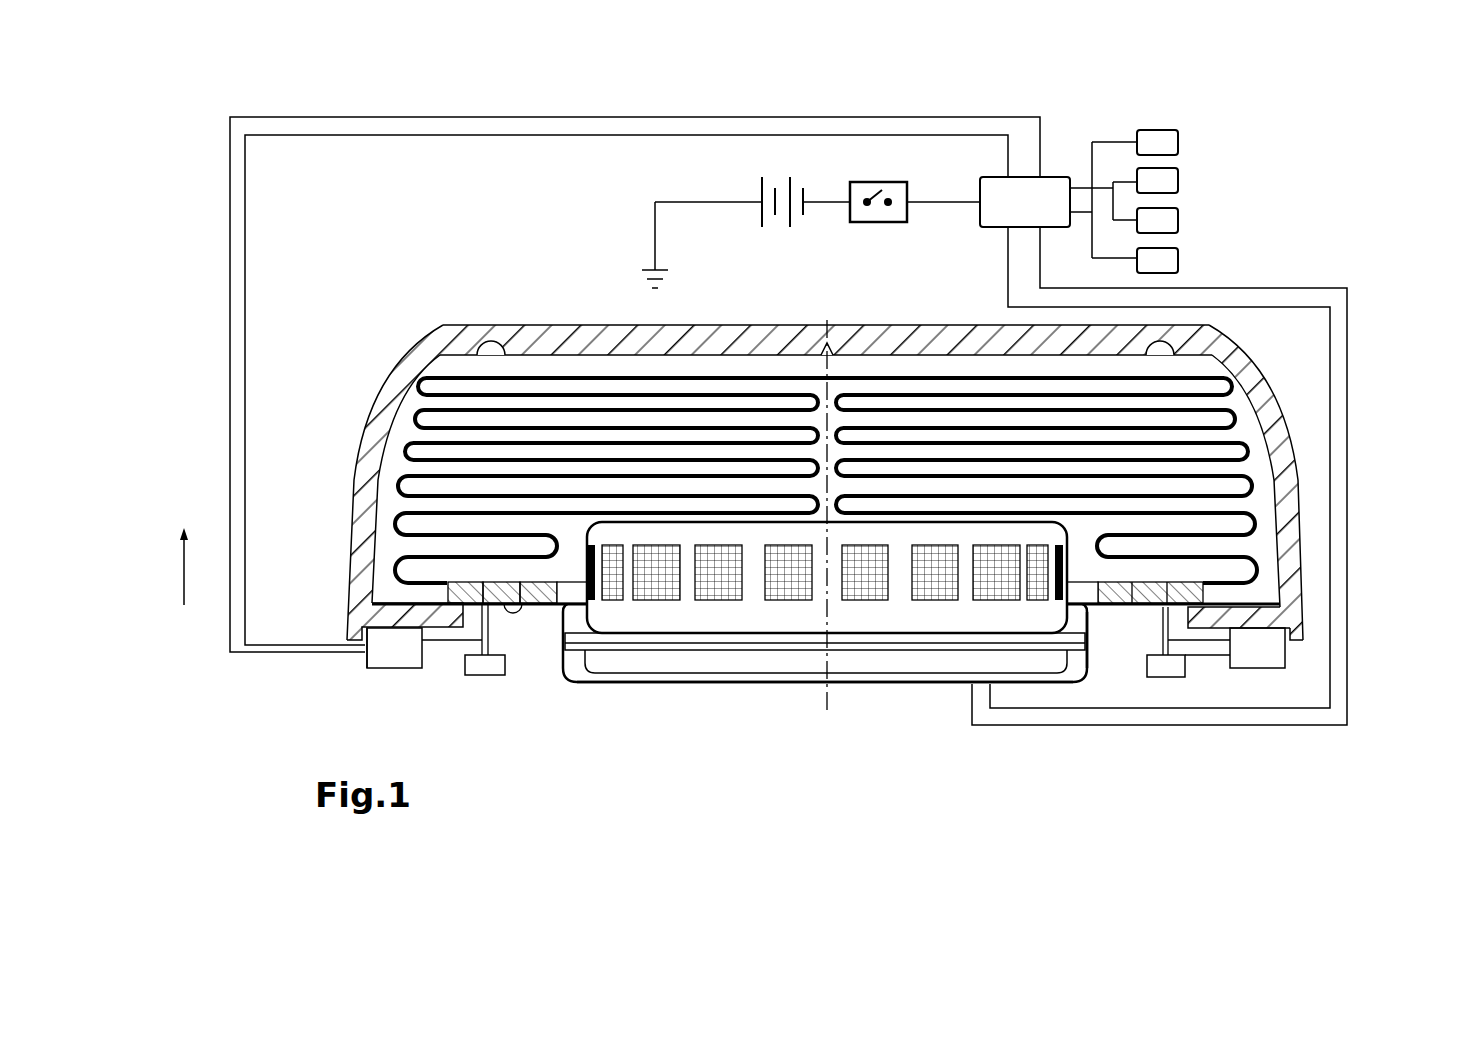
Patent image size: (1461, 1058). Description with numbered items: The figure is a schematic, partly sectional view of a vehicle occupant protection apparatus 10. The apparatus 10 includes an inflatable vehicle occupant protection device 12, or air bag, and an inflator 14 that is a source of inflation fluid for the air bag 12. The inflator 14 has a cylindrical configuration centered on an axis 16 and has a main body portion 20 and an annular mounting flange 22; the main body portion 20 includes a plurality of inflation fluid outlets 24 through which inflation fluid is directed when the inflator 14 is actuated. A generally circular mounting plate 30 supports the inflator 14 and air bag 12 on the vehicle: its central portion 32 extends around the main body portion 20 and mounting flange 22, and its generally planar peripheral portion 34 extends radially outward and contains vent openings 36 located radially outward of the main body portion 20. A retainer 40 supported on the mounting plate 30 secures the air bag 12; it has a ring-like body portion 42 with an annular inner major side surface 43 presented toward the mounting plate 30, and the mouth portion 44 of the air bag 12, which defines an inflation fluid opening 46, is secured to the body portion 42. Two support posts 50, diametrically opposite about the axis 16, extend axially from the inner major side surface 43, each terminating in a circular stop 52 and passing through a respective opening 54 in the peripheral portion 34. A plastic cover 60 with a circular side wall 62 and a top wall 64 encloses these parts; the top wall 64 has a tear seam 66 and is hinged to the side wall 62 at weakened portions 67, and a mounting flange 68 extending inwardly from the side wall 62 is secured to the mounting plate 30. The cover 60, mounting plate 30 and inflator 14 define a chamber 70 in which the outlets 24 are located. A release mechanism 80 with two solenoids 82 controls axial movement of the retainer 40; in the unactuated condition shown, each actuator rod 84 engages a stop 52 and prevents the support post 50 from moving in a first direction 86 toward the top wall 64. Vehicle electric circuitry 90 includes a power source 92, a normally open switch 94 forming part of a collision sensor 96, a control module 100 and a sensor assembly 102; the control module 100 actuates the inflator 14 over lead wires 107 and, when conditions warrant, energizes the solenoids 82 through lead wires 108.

The vehicle occupant protection apparatus 10 is at (486, 788).
The inflatable vehicle occupant protection device 12 is at (423, 358).
The inflator 14 is at (750, 665).
The axis 16 is at (830, 318).
The main body portion 20 is at (794, 617).
The annular mounting flange 22 is at (673, 650).
The inflation fluid outlets 24 is at (933, 587).
The mounting plate 30 is at (928, 690).
The central portion 32 is at (1063, 686).
The peripheral portion 34 is at (1243, 604).
The vent openings 36 is at (488, 630).
The retainer 40 is at (462, 575).
The body portion 42 is at (395, 593).
The annular inner major side surface 43 is at (514, 600).
The mouth portion 44 is at (373, 598).
The inflation fluid opening 46 is at (1182, 572).
The support posts 50 is at (543, 608).
The circular stop 52 is at (487, 668).
The opening 54 is at (492, 583).
The cover 60 is at (1282, 394).
The circular side wall 62 is at (402, 388).
The top wall 64 is at (624, 323).
The tear seam 66 is at (822, 322).
The predetermined weakened portions 67 is at (490, 342).
The mounting flange 68 is at (1300, 614).
The chamber 70 is at (540, 374).
The release mechanism 80 is at (362, 668).
The solenoids 82 is at (387, 655).
The actuator rod 84 is at (448, 648).
The first direction 86 is at (154, 566).
The vehicle electric circuitry 90 is at (910, 90).
The power source 92 is at (760, 190).
The normally open switch 94 is at (873, 192).
The collision sensor 96 is at (868, 222).
The control module 100 is at (1056, 180).
The sensor assembly 102 is at (1167, 140).
The lead wires 107 is at (1222, 305).
The lead wires 108 is at (570, 135).